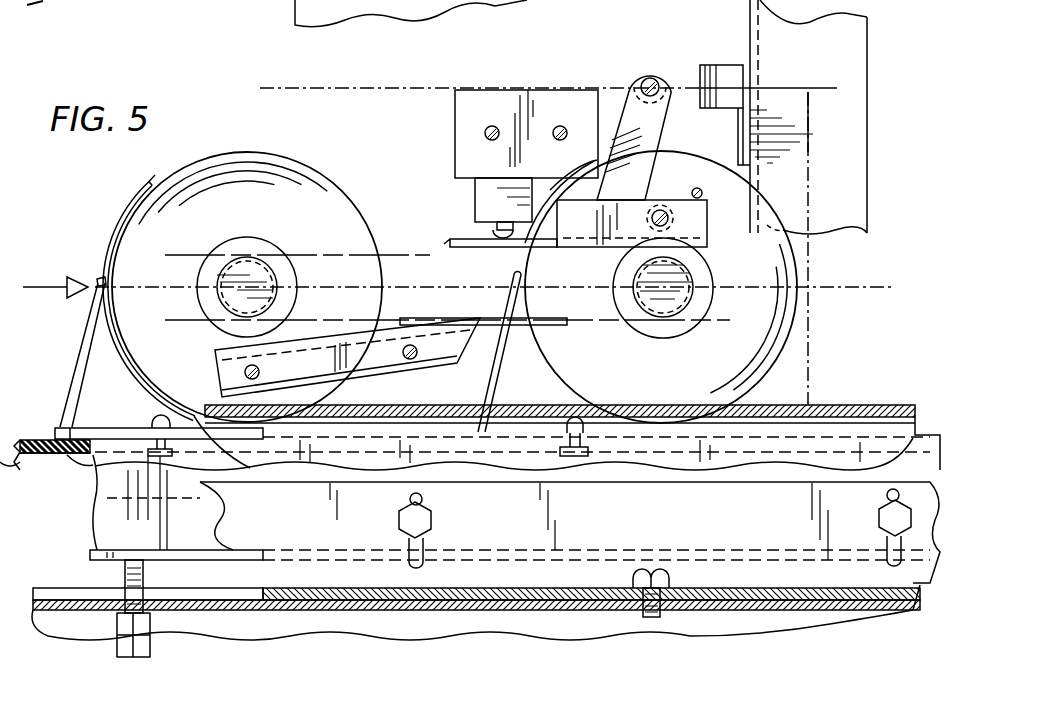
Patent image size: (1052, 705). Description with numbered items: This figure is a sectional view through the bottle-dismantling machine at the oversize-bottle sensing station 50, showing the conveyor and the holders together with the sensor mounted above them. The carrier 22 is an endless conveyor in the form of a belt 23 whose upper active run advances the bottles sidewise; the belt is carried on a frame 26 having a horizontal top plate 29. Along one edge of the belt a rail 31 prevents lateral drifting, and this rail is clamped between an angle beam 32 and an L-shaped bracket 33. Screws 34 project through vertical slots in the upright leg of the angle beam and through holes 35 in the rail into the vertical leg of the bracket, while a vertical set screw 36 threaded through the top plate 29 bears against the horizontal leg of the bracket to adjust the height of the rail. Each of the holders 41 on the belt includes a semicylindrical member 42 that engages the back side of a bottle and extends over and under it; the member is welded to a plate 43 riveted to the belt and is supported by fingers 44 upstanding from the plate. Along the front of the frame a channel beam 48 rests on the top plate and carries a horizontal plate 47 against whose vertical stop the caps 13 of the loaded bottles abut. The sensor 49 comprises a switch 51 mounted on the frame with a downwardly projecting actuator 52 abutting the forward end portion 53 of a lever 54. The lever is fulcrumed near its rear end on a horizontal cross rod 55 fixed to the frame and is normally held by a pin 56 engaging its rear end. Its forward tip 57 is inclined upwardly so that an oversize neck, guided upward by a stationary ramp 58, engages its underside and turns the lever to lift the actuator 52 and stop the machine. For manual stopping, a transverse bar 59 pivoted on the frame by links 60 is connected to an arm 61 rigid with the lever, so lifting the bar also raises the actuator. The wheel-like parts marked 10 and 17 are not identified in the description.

The grinding wheel 10 is at (308, 168).
The cap 13 is at (273, 262).
The shaft 17 is at (217, 328).
The carrier 22 is at (45, 432).
The belt 23 is at (67, 463).
The frame 26 is at (97, 611).
The top plate 29 is at (207, 592).
The rail 31 is at (107, 510).
The angle beam 32 is at (247, 522).
The L-shaped bracket 33 is at (107, 563).
The screws 34 is at (425, 515).
The holes 35 is at (422, 545).
The set screw 36 is at (145, 580).
The holders 41 is at (115, 232).
The semicylindrical member 42 is at (143, 383).
The plate 43 is at (130, 420).
The fingers 44 is at (80, 350).
The horizontal plate 47 is at (840, 403).
The channel beam 48 is at (767, 473).
The sensor 49 is at (455, 172).
The station 50 is at (424, 111).
The switch 51 is at (542, 90).
The actuator 52 is at (497, 227).
The forward end portion 53 is at (512, 250).
The lever 54 is at (610, 248).
The cross rod 55 is at (672, 222).
The pin 56 is at (697, 188).
The forward tip 57 is at (450, 241).
The ramp 58 is at (360, 338).
The transverse bar 59 is at (645, 72).
The links 60 is at (723, 63).
The arm 61 is at (622, 117).